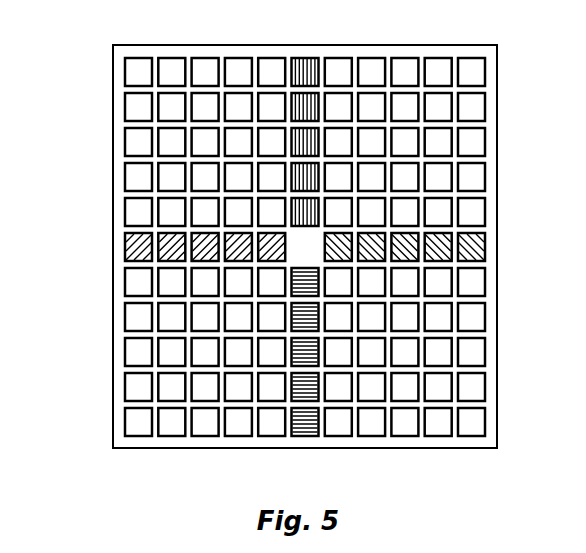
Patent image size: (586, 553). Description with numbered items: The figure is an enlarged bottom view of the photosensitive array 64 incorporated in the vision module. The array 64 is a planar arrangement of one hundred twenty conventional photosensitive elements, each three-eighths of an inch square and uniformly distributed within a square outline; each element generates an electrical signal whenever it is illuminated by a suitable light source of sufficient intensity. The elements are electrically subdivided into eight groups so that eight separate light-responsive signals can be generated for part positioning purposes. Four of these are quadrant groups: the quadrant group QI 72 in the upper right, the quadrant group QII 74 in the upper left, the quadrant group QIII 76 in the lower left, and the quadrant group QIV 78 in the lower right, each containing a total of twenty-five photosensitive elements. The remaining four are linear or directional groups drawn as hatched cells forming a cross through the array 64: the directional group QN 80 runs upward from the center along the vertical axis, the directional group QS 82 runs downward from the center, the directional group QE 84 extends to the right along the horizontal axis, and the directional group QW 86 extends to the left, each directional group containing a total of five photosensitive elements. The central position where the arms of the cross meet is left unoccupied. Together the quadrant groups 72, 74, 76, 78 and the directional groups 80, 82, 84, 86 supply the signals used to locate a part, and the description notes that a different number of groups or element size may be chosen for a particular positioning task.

The photosensitive array 64 is at (94, 127).
The quadrant group QI 72 is at (443, 105).
The quadrant group QII 74 is at (130, 100).
The quadrant group QIII 76 is at (210, 390).
The quadrant group QIV 78 is at (403, 383).
The directional group QN 80 is at (315, 73).
The directional group QS 82 is at (303, 390).
The directional group QE 84 is at (480, 247).
The directional group QW 86 is at (140, 244).